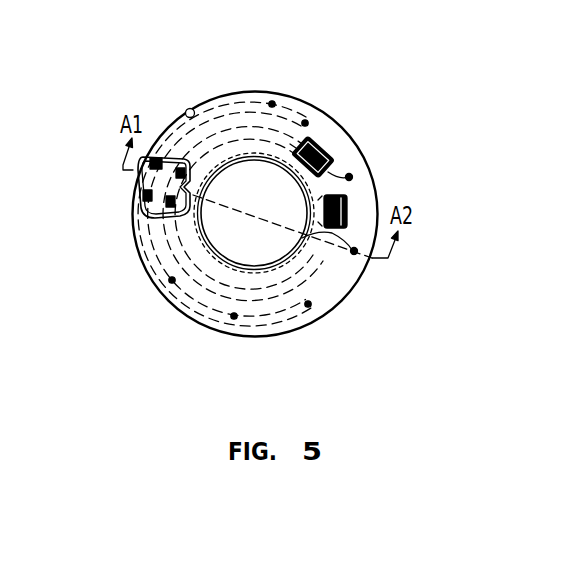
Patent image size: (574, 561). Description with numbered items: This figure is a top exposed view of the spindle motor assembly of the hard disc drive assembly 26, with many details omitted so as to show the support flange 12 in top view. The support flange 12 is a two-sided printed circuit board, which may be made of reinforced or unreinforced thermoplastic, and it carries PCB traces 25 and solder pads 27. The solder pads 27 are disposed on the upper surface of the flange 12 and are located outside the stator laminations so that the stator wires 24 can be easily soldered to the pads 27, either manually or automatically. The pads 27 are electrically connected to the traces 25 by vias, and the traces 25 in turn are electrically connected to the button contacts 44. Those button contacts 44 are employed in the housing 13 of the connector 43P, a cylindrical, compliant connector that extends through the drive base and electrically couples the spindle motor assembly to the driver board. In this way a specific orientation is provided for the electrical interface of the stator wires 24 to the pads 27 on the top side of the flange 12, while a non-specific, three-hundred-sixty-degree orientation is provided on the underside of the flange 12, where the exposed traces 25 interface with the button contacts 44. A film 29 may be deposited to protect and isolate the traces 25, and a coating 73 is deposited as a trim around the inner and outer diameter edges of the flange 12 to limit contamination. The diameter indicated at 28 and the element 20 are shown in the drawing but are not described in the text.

The support flange 12 is at (232, 213).
The housing 13 is at (122, 207).
The capacitor 20 is at (356, 203).
The stator wires 24 is at (332, 167).
The PCB traces 25 is at (208, 325).
The hard disc drive assembly 26 is at (467, 68).
The solder pads 27 is at (305, 122).
The bore 28 is at (258, 265).
The film 29 is at (187, 110).
The connector 43P is at (128, 208).
The button contacts 44 is at (130, 188).
The coating 73 is at (237, 263).